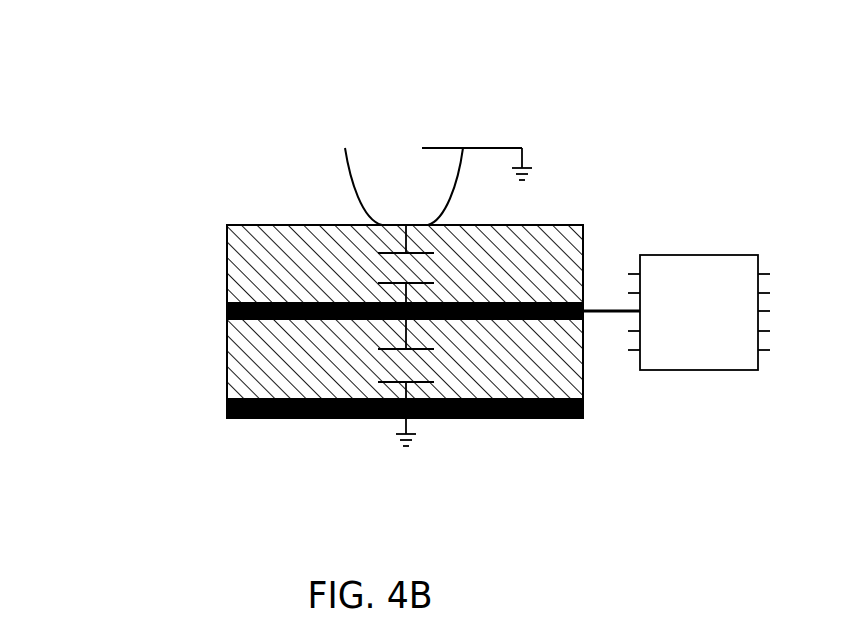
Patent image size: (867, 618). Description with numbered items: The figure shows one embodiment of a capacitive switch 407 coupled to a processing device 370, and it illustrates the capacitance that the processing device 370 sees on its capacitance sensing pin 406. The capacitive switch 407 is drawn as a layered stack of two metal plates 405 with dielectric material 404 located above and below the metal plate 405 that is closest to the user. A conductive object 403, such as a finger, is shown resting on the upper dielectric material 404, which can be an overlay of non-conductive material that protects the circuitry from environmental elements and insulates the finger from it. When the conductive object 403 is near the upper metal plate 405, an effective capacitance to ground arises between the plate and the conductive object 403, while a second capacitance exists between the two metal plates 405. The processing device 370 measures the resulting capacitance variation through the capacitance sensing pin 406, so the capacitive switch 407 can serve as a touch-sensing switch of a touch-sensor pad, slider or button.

The capacitive switch 407 is at (323, 255).
The conductive object 403 is at (388, 193).
The dielectric material 404 is at (245, 272).
The metal plates 405 is at (225, 315).
The capacitance sensing pin 406 is at (598, 310).
The processing device 370 is at (699, 312).